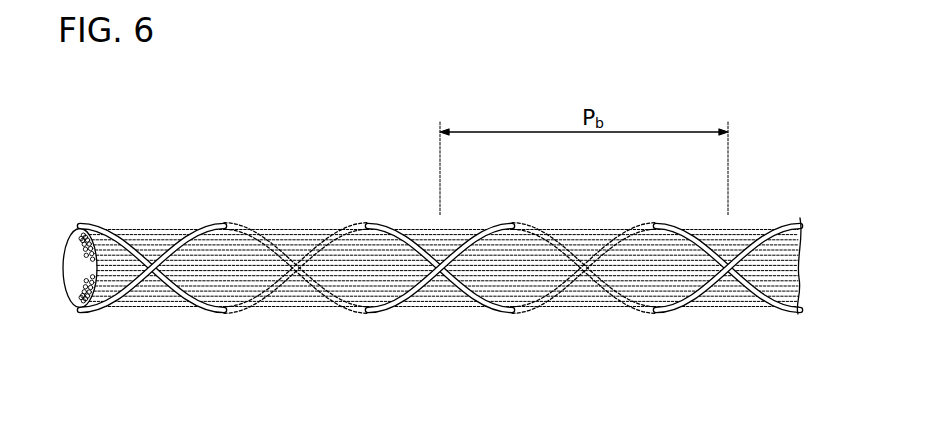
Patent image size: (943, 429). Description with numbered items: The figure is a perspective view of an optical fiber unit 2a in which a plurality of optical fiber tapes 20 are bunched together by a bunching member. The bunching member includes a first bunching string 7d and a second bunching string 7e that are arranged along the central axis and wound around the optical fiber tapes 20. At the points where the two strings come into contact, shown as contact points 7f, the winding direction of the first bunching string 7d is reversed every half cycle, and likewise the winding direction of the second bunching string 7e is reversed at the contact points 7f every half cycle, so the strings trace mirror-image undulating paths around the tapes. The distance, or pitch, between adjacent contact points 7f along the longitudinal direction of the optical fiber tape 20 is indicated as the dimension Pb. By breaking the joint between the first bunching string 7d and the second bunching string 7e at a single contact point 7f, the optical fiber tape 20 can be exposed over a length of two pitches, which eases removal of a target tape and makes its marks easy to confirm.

The optical fiber tape 20 is at (276, 229).
The first bunching string 7d is at (102, 228).
The second bunching string 7e is at (87, 310).
The contact point 7f is at (153, 270).
The optical fiber unit 2a is at (745, 143).